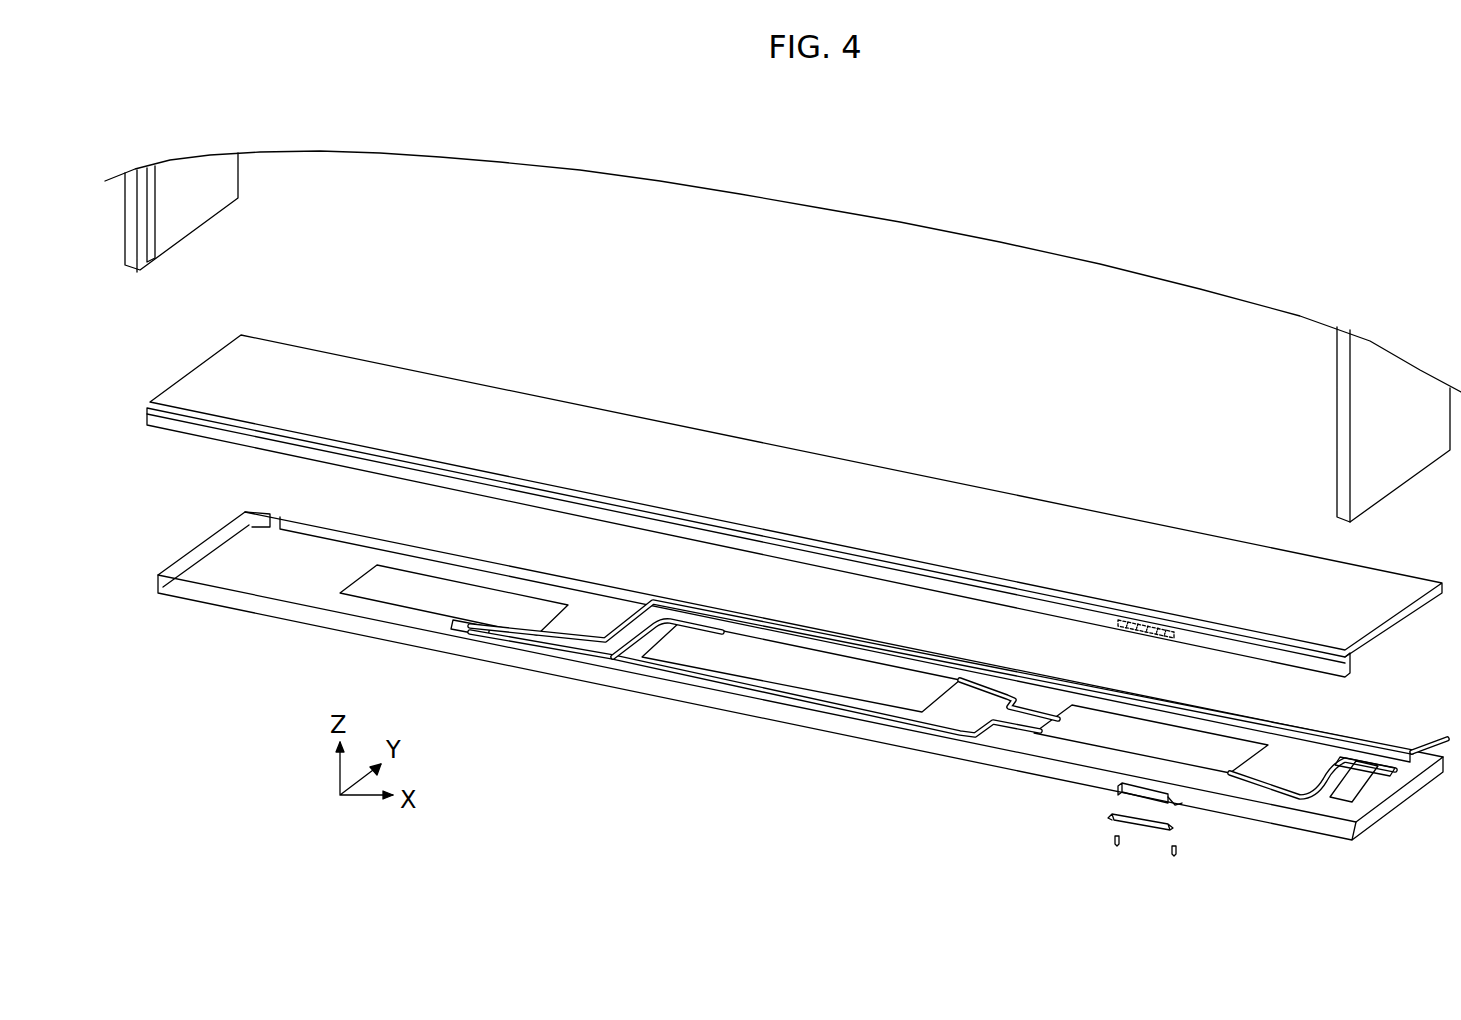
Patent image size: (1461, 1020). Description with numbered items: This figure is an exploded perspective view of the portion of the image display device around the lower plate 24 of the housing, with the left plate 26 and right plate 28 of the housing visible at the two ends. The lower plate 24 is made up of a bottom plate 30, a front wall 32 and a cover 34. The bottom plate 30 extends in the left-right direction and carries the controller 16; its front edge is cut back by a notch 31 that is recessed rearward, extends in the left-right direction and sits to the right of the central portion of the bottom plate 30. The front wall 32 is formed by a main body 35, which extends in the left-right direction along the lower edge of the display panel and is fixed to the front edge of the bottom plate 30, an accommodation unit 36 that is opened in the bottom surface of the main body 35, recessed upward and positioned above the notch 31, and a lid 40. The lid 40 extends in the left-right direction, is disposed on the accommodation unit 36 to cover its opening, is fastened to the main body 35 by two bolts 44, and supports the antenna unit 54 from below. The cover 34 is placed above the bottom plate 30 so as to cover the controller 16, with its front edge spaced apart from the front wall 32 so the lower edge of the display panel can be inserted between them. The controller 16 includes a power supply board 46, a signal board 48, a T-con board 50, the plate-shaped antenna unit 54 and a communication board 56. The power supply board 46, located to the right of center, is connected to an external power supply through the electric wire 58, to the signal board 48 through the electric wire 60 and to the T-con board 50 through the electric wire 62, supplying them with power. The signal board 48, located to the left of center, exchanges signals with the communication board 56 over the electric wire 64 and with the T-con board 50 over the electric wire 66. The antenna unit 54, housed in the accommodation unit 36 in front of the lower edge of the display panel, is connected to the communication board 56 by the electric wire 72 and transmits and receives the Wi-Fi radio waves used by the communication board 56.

The controller 16 is at (879, 704).
The lower plate 24 is at (794, 508).
The left plate 26 is at (185, 210).
The right plate 28 is at (1403, 455).
The bottom plate 30 is at (265, 600).
The notch 31 is at (1172, 812).
The front wall 32 is at (748, 542).
The cover 34 is at (655, 450).
The main body 35 is at (390, 462).
The accommodation unit 36 is at (1145, 635).
The lid 40 is at (1145, 828).
The bolts 44 is at (1174, 857).
The power supply board 46 is at (1103, 720).
The signal board 48 is at (462, 600).
The T-con board 50 is at (800, 665).
The antenna unit 54 is at (1130, 792).
The communication board 56 is at (1350, 795).
The electric wire 58 is at (1430, 745).
The electric wire 60 is at (870, 715).
The electric wire 62 is at (985, 695).
The electric wire 64 is at (625, 625).
The electric wire 66 is at (652, 628).
The electric wire 72 is at (1283, 792).